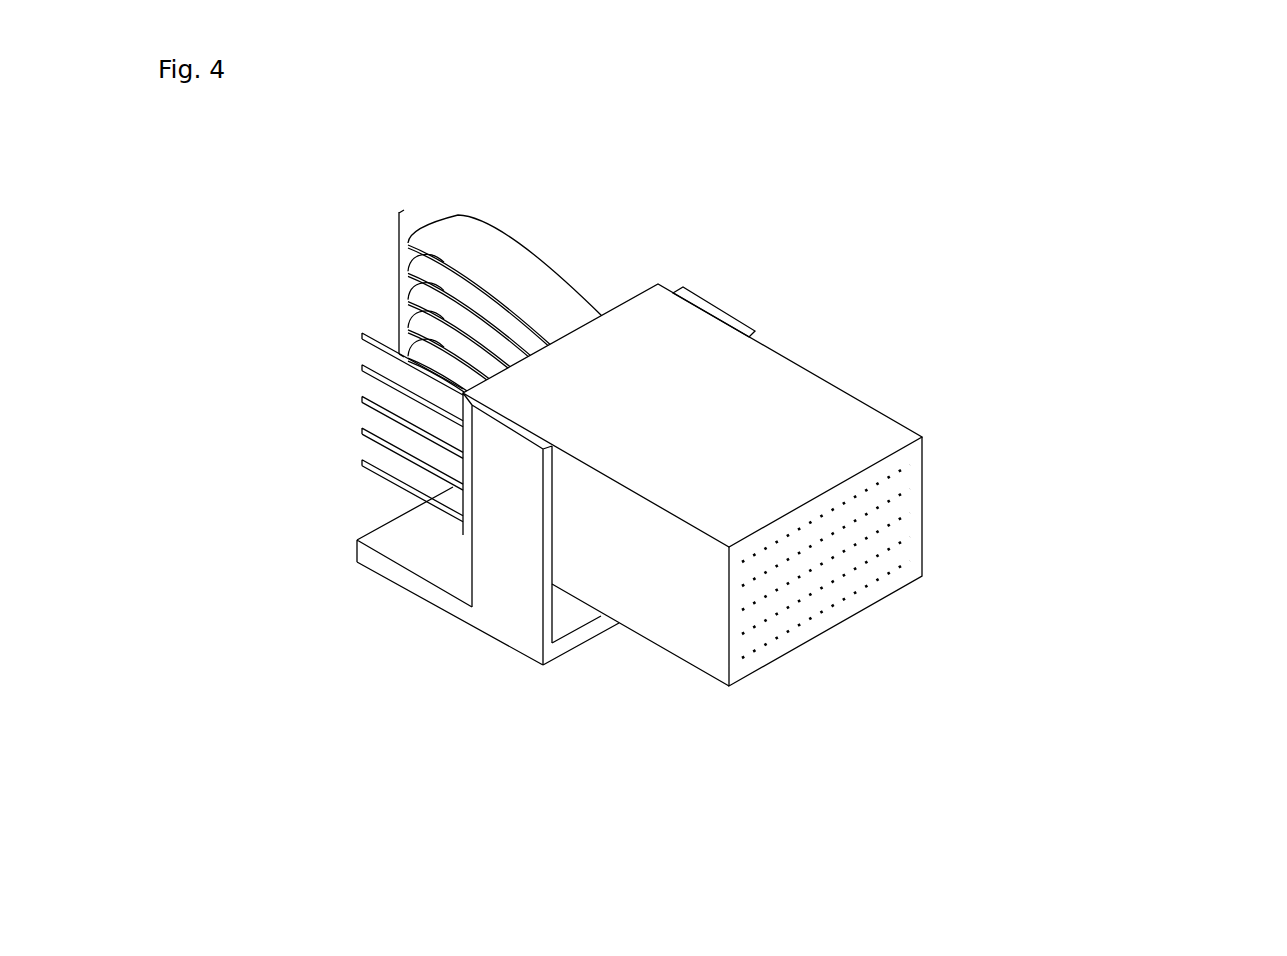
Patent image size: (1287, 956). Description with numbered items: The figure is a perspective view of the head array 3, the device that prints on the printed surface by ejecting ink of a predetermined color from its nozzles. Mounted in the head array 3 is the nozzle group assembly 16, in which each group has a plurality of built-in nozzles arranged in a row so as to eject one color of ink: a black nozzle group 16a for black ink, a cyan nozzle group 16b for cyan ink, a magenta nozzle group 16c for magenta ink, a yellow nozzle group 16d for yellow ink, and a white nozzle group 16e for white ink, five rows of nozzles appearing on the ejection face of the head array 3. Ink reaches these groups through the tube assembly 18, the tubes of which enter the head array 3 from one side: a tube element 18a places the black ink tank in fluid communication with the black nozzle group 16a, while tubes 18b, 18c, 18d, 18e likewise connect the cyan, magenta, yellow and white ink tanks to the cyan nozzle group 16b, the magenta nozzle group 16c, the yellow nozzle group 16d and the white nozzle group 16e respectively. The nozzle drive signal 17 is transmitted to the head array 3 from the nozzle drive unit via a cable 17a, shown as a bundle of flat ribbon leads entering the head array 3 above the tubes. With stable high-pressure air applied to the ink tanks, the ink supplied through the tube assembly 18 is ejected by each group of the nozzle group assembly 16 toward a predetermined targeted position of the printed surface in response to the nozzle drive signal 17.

The head array 3 is at (832, 350).
The nozzle group assembly 16 is at (1012, 504).
The black nozzle group 16a is at (929, 455).
The cyan nozzle group 16b is at (929, 484).
The magenta nozzle group 16c is at (927, 513).
The yellow nozzle group 16d is at (928, 540).
The white nozzle group 16e is at (929, 566).
The nozzle drive signal 17 is at (370, 319).
The cable 17a is at (516, 253).
The tube assembly 18 is at (321, 418).
The tube element 18a is at (360, 338).
The tube 18b is at (360, 370).
The tube 18c is at (360, 401).
The tube 18d is at (360, 433).
The tube 18e is at (363, 479).